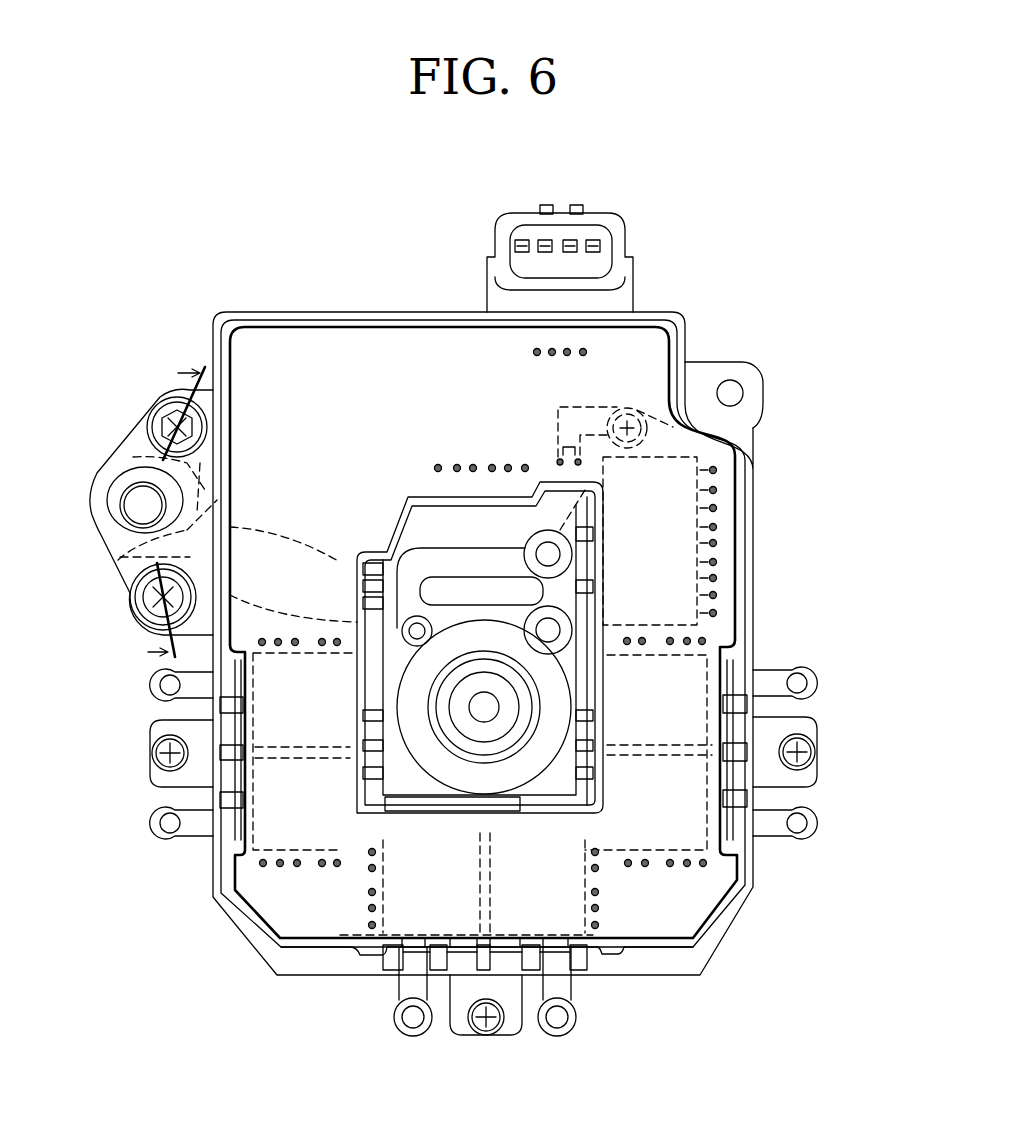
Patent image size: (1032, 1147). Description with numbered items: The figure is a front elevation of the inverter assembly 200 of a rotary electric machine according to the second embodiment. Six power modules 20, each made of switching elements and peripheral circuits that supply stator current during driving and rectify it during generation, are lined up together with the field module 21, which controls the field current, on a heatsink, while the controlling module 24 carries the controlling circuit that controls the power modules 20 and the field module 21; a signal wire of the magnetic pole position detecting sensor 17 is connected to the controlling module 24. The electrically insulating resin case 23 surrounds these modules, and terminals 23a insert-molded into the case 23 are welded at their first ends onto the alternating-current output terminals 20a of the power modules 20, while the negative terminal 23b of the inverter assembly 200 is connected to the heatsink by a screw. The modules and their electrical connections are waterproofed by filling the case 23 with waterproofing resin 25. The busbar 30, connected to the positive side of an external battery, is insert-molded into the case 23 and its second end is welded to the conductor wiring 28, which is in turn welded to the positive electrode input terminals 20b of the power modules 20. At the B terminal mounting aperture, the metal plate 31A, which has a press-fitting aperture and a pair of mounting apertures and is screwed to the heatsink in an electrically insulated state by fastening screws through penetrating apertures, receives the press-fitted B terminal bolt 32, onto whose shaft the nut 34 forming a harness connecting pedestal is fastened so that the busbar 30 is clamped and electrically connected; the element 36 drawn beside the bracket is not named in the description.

The inverter assembly 200 is at (210, 173).
The magnetic pole position detecting sensor 17 is at (532, 757).
The power module 20 is at (280, 708).
The alternating-current output terminal 20a is at (730, 682).
The positive electrode input terminal 20b is at (353, 768).
The field module 21 is at (740, 500).
The case 23 is at (435, 323).
The terminal 23a is at (813, 668).
The negative terminal 23b is at (805, 725).
The controlling module 24 is at (382, 367).
The waterproofing resin 25 is at (322, 347).
The conductor wiring 28 is at (383, 820).
The busbar 30 is at (118, 562).
The metal plate 31A is at (133, 457).
The B terminal bolt 32 is at (133, 490).
The nut 34 is at (110, 500).
The fixing screw 36 is at (163, 413).